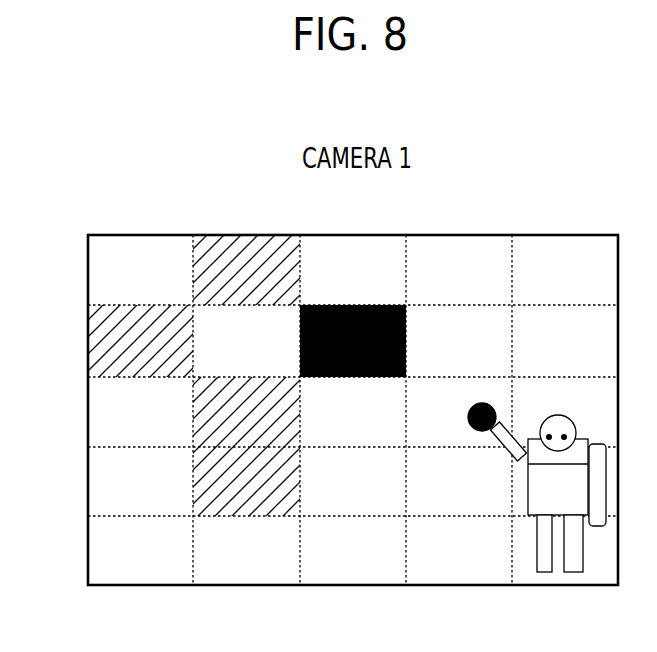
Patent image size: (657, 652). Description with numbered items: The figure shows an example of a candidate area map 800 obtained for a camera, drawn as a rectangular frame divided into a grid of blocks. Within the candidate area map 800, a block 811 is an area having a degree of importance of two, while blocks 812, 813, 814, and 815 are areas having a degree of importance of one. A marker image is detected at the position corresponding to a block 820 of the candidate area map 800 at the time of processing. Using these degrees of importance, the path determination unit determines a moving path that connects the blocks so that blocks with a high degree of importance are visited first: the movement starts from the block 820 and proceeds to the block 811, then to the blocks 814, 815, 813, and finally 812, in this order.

The candidate area map 800 is at (562, 236).
The block 811 is at (345, 305).
The block 812 is at (250, 240).
The block 813 is at (100, 346).
The block 814 is at (204, 413).
The block 815 is at (205, 478).
The block 820 is at (470, 416).